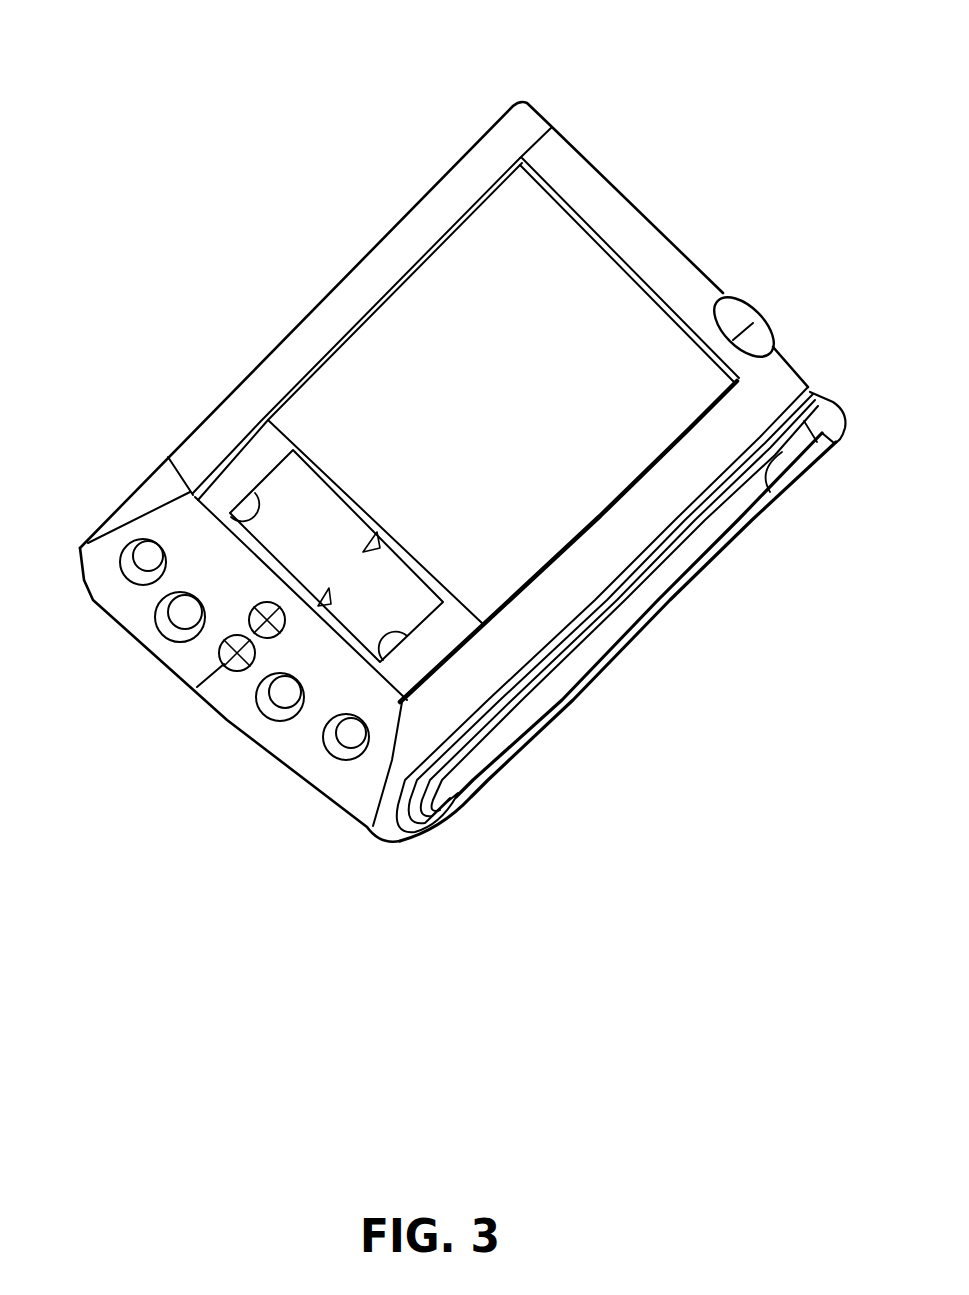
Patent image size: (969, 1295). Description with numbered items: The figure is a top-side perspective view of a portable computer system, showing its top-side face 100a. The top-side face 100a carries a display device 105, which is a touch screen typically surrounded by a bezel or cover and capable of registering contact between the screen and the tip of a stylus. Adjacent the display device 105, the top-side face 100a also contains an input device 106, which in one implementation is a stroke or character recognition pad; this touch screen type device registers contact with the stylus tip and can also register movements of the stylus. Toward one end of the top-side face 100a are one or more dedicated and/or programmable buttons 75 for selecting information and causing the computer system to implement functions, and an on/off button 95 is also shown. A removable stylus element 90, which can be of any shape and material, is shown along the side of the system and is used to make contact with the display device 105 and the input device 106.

The top-side face 100a is at (372, 34).
The display device 105 is at (540, 320).
The input device 106 is at (350, 552).
The buttons 75 is at (150, 557).
The on/off button 95 is at (737, 318).
The stylus element 90 is at (722, 520).